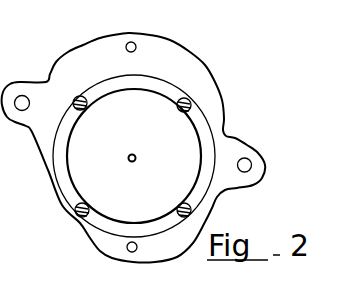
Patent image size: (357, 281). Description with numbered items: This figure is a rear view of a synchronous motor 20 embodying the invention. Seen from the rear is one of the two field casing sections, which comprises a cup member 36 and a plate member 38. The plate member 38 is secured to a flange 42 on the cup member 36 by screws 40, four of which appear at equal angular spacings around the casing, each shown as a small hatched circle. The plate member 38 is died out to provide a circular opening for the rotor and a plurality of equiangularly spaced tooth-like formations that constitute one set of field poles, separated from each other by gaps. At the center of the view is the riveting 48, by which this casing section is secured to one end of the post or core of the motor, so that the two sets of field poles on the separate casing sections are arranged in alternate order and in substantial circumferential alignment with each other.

The synchronous motor 20 is at (134, 138).
The cup member 36 is at (151, 183).
The plate member 38 is at (212, 100).
The screws 40 is at (79, 96).
The flange 42 is at (107, 223).
The riveting 48 is at (132, 154).